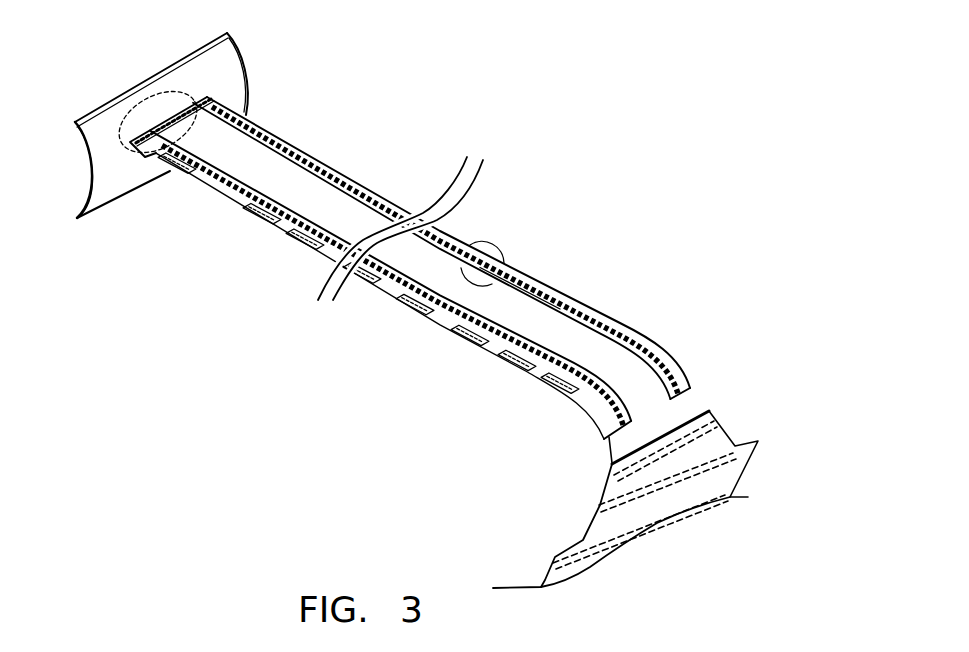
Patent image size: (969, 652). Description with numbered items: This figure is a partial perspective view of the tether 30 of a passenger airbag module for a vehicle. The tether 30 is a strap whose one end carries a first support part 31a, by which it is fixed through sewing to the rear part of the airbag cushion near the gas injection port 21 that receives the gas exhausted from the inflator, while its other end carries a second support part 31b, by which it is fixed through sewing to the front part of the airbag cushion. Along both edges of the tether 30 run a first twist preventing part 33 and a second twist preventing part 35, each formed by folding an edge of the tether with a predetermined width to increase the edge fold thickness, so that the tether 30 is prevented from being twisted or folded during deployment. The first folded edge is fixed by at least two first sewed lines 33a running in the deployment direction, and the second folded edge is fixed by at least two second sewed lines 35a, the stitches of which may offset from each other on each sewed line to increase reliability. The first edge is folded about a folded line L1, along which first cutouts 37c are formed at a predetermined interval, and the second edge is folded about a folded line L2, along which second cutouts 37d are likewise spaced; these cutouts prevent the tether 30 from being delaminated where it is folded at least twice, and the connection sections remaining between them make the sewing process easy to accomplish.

The gas injection port 21 is at (147, 115).
The first support part 31a is at (172, 112).
The second support part 31b is at (674, 494).
The tether 30 is at (658, 408).
The first twist preventing part 33 is at (503, 240).
The first sewed lines 33a is at (505, 259).
The second twist preventing part 35 is at (508, 320).
The second sewed lines 35a is at (503, 356).
The first cutouts 37c is at (463, 240).
The second cutouts 37d is at (373, 286).
The folded line L1 is at (375, 192).
The folded line L2 is at (292, 236).